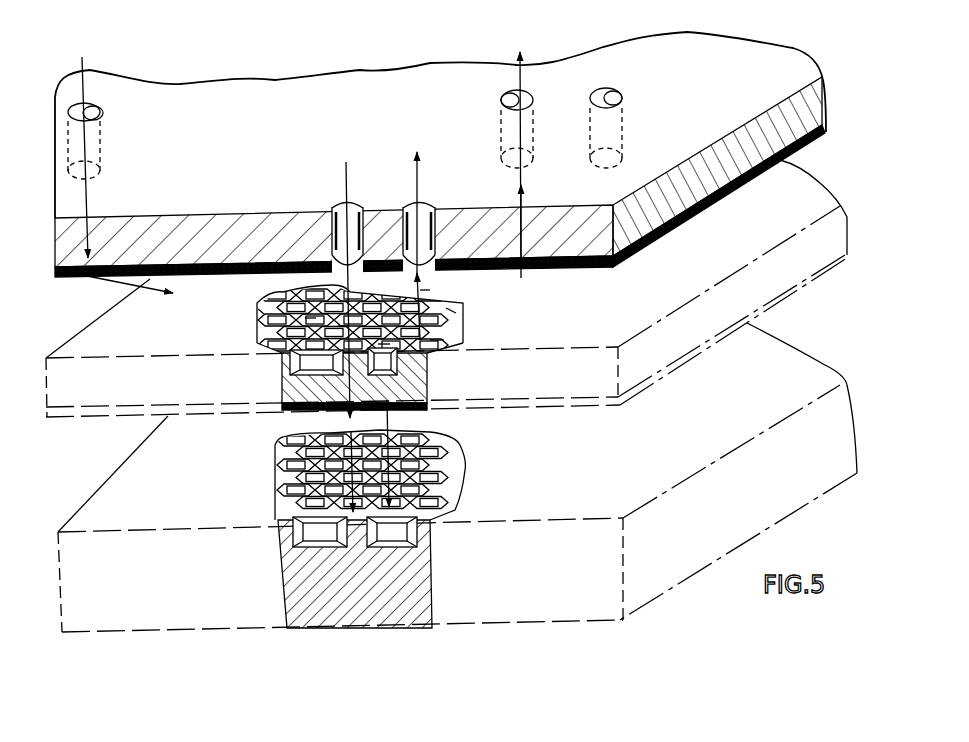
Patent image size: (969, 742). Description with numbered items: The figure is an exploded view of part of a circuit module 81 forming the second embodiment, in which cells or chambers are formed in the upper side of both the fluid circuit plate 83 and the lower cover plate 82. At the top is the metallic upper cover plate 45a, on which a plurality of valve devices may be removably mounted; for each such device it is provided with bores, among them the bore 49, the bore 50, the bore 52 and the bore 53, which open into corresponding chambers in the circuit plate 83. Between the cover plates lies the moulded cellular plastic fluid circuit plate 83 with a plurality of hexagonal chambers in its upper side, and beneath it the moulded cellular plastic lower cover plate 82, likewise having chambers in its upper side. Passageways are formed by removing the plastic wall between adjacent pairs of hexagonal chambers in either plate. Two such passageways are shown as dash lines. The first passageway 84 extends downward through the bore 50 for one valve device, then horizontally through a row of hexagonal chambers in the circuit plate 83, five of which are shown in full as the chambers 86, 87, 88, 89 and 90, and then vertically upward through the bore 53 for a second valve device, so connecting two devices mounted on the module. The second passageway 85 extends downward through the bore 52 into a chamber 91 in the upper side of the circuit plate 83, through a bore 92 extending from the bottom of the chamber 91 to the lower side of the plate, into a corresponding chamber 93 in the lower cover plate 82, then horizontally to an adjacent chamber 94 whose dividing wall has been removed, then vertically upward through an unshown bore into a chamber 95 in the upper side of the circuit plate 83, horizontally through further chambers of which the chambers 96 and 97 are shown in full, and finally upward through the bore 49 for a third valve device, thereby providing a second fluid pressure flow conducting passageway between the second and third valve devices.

The upper cover plate 45a is at (810, 99).
The bore 49 is at (502, 100).
The bore 50 is at (100, 112).
The bore 52 is at (334, 205).
The bore 53 is at (405, 205).
The circuit module 81 is at (254, 120).
The lower cover plate 82 is at (835, 412).
The fluid circuit plate 83 is at (840, 208).
The first passageway 84 is at (90, 71).
The second passageway 85 is at (521, 68).
The hexagonal chamber 86 is at (257, 313).
The hexagonal chamber 87 is at (310, 322).
The hexagonal chamber 88 is at (342, 325).
The hexagonal chamber 89 is at (383, 347).
The hexagonal chamber 90 is at (437, 343).
The chamber 91 is at (360, 376).
The bore 92 is at (347, 412).
The chamber 93 is at (350, 514).
The chamber 94 is at (407, 504).
The chamber 95 is at (425, 289).
The chamber 96 is at (452, 311).
The chamber 97 is at (262, 311).